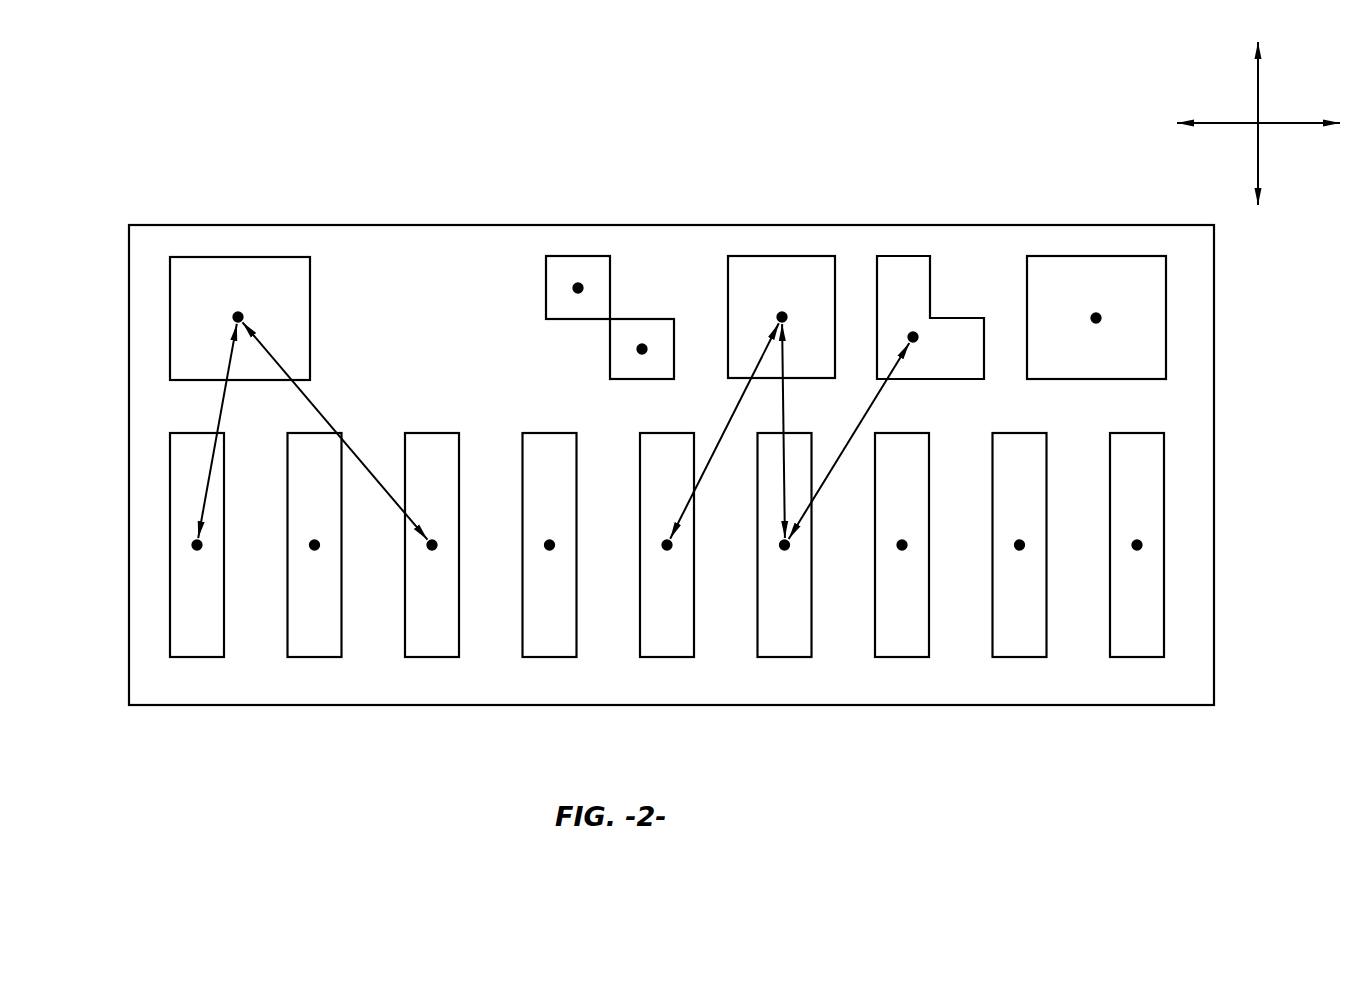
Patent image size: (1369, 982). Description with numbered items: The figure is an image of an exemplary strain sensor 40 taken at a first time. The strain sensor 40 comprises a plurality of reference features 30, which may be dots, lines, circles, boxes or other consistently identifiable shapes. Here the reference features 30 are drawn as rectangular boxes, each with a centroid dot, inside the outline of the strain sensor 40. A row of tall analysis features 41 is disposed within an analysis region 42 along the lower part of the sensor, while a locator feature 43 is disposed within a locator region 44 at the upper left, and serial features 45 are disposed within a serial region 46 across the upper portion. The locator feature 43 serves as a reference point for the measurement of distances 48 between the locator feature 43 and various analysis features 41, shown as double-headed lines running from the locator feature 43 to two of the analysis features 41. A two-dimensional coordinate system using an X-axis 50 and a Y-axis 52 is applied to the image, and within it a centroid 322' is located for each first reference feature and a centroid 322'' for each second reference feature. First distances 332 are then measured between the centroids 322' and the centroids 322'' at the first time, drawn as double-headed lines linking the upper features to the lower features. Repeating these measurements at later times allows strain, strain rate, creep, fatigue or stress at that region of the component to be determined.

The reference feature 30 is at (572, 663).
The strain sensor 40 is at (112, 283).
The analysis feature 41 is at (193, 597).
The analysis region 42 is at (285, 673).
The locator feature 43 is at (280, 290).
The locator region 44 is at (335, 290).
The serial feature 45 is at (763, 270).
The serial region 46 is at (662, 260).
The distance 48 is at (225, 392).
The X-axis 50 is at (1258, 93).
The Y-axis 52 is at (1280, 125).
The centroid of first reference feature 322' is at (868, 270).
The centroid of second reference feature 322'' is at (737, 596).
The first distance 332 is at (740, 395).